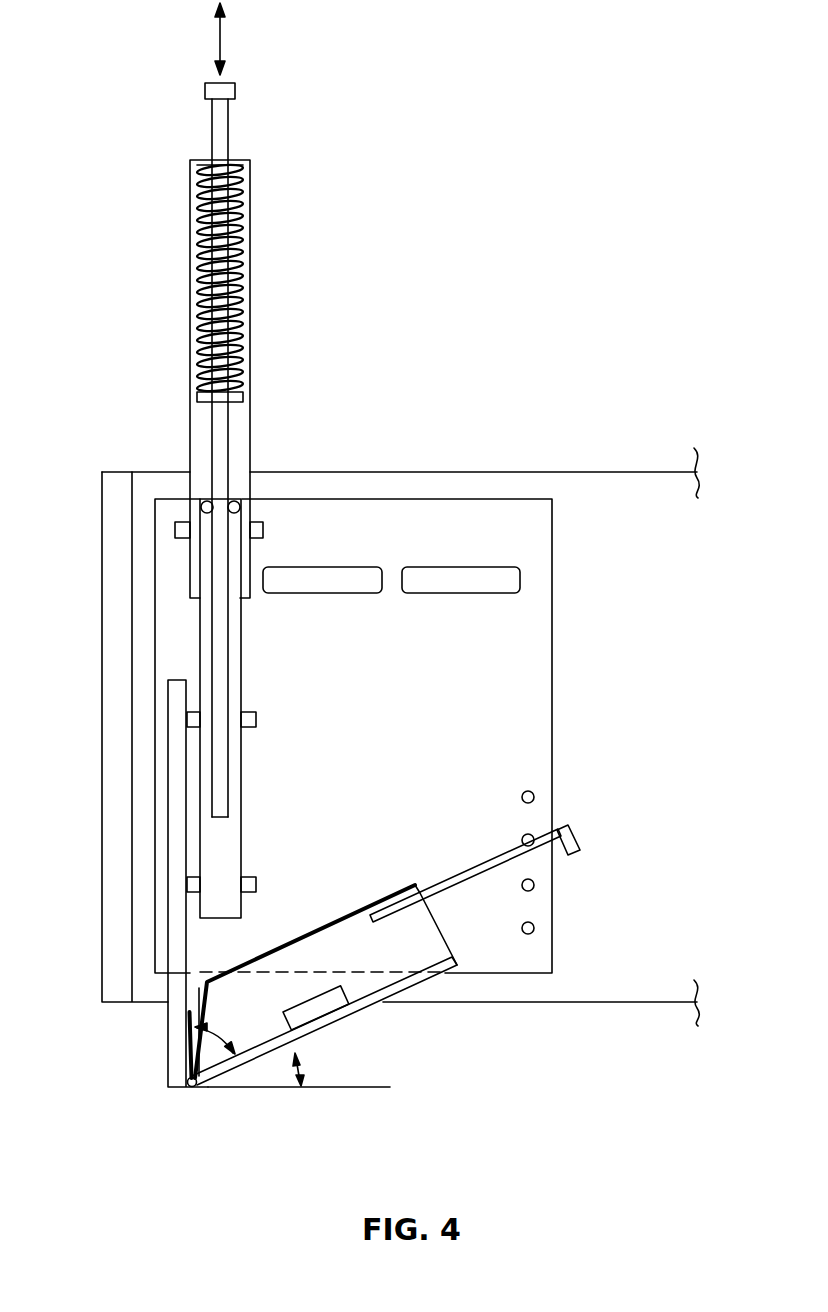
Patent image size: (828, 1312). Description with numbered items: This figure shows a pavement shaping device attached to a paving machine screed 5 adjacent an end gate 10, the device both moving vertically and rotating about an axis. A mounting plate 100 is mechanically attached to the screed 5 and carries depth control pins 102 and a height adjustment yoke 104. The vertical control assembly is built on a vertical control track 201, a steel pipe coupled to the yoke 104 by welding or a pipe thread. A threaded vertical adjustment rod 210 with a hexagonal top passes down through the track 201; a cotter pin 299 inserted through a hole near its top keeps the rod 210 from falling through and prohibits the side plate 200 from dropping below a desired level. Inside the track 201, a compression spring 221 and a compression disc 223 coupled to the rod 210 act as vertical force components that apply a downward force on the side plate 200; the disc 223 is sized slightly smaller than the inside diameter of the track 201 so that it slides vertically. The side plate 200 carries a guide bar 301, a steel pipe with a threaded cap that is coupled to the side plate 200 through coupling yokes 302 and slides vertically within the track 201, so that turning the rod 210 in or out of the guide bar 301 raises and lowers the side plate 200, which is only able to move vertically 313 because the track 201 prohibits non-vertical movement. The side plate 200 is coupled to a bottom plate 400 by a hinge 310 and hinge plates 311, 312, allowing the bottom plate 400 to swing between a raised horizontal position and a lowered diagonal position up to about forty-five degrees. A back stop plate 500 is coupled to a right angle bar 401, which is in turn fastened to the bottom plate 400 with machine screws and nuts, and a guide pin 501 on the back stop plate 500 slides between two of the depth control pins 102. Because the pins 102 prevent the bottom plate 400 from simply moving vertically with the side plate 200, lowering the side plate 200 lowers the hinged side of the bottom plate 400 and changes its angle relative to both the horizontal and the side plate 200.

The screed 5 is at (623, 486).
The end gate 10 is at (128, 694).
The mounting plate 100 is at (538, 538).
The depth control pins 102 is at (536, 794).
The height adjustment yoke 104 is at (264, 530).
The side plate 200 is at (167, 923).
The vertical control track 201 is at (252, 282).
The vertical adjustment rod 210 is at (230, 133).
The compression spring 221 is at (248, 222).
The compression disc 223 is at (200, 399).
The cotter pin 299 is at (208, 158).
The guide bar 301 is at (242, 642).
The coupling yokes 302 is at (270, 719).
The hinge 310 is at (176, 1097).
The hinge plate 311 is at (189, 1030).
The hinge plate 312 is at (197, 1087).
The vertical movement 313 is at (222, 40).
The bottom plate 400 is at (328, 1024).
The right angle bar 401 is at (342, 998).
The back stop plate 500 is at (268, 958).
The guide pin 501 is at (458, 888).